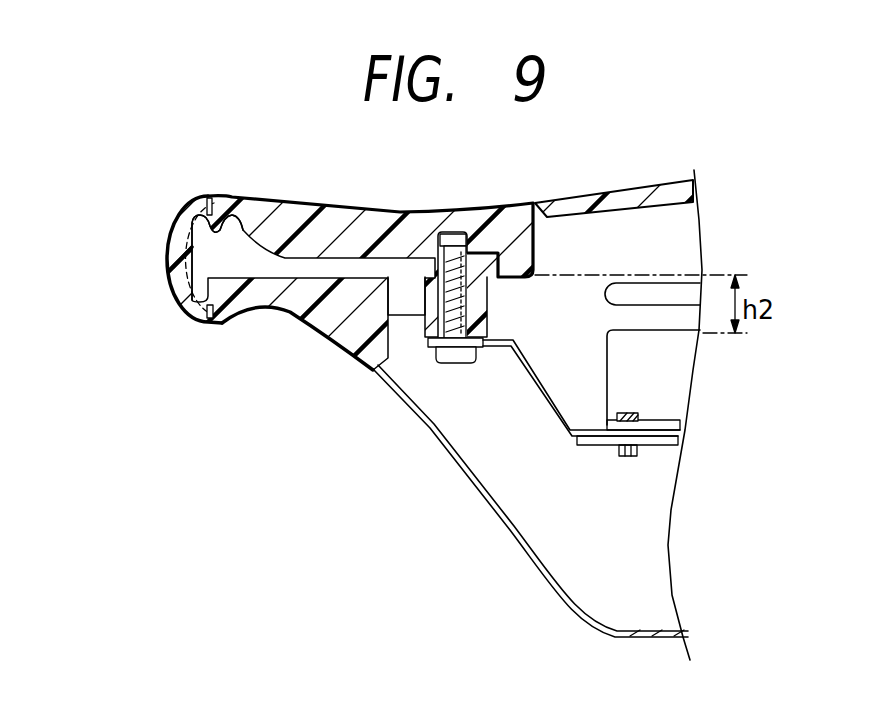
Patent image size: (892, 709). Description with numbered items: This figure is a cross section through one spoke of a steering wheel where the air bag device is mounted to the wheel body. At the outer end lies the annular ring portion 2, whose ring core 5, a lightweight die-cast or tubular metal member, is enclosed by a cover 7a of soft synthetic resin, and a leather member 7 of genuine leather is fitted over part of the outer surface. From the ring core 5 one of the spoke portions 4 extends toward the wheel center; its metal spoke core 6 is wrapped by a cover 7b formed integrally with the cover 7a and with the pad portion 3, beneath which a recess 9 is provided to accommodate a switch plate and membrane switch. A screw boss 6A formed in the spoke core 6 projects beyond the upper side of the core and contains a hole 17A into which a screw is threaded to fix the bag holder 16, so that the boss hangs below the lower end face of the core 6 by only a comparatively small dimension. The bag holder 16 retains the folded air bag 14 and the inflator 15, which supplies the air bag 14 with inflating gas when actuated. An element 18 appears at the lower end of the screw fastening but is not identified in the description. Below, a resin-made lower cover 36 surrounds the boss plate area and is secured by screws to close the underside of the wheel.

The ring portion 2 is at (170, 240).
The pad portion 3 is at (640, 196).
The spoke portions 4 is at (290, 208).
The core of ring portion 5 is at (228, 197).
The core of spoke portion 6 is at (337, 256).
The screw boss 6A is at (468, 233).
The leather member 7 is at (177, 310).
The cover of ring core 7a is at (172, 253).
The cover of spoke core 7b is at (317, 338).
The recess 9 is at (661, 249).
The air bag 14 is at (608, 284).
The inflator 15 is at (607, 410).
The bag holder 16 is at (533, 364).
The hole 17A is at (445, 240).
The nut 18 is at (462, 364).
The lower cover 36 is at (512, 537).